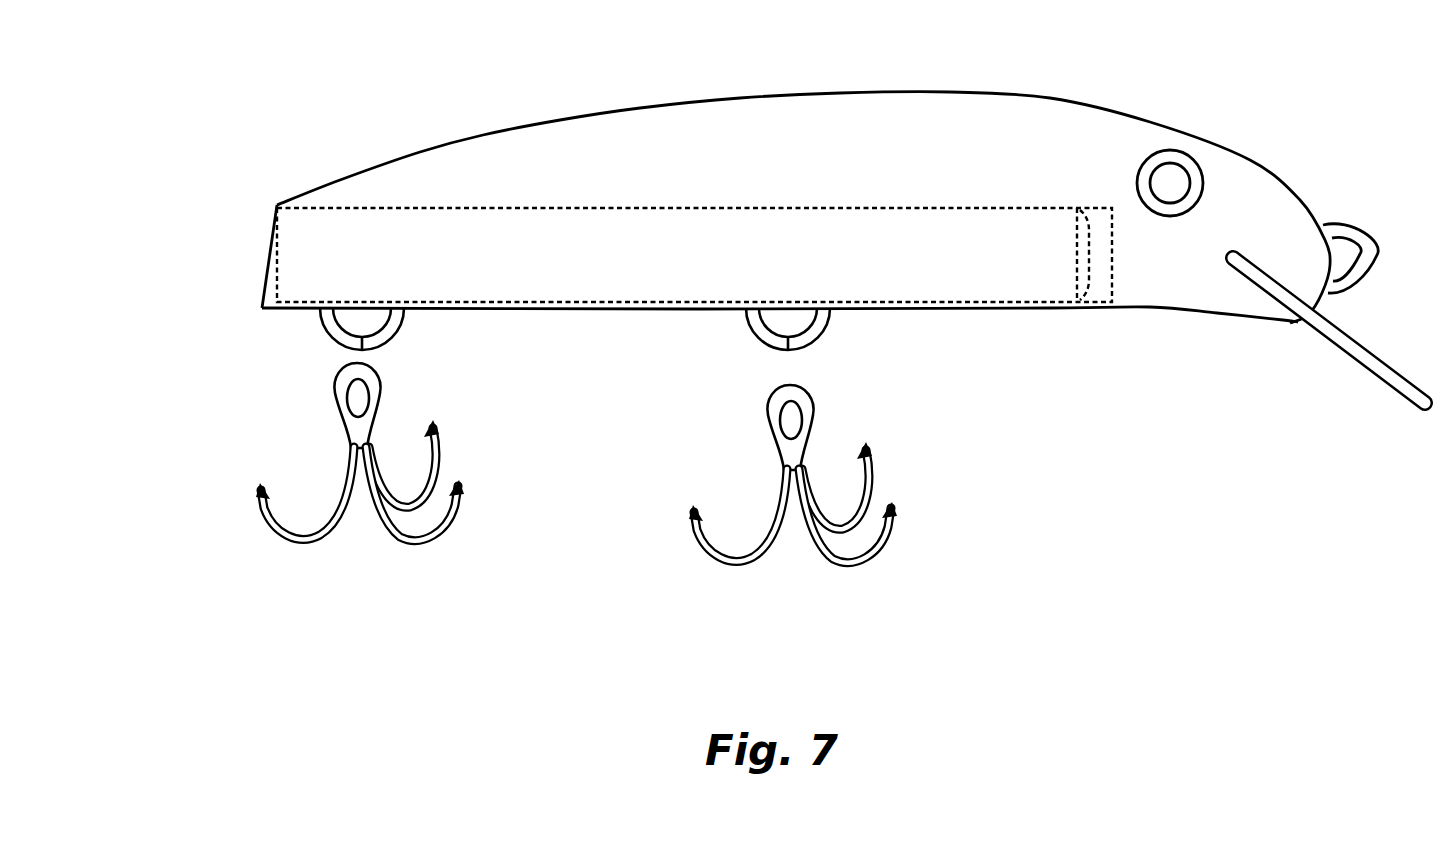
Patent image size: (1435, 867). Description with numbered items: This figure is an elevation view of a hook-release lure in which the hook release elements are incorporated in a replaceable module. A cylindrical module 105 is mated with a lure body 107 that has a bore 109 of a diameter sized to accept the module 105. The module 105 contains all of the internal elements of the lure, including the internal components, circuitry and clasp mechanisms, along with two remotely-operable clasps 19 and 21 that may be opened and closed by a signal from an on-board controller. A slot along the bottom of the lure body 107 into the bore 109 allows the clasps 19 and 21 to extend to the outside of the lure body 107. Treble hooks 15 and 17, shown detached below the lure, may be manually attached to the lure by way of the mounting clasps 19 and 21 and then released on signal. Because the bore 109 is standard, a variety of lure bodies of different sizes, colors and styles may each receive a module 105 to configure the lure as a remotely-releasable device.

The lure body 107 is at (483, 133).
The cylindrical module 105 is at (618, 242).
The bore 109 is at (268, 295).
The mounting clasp 19 is at (320, 328).
The mounting clasp 21 is at (750, 333).
The treble hook 15 is at (438, 475).
The treble hook 17 is at (887, 545).